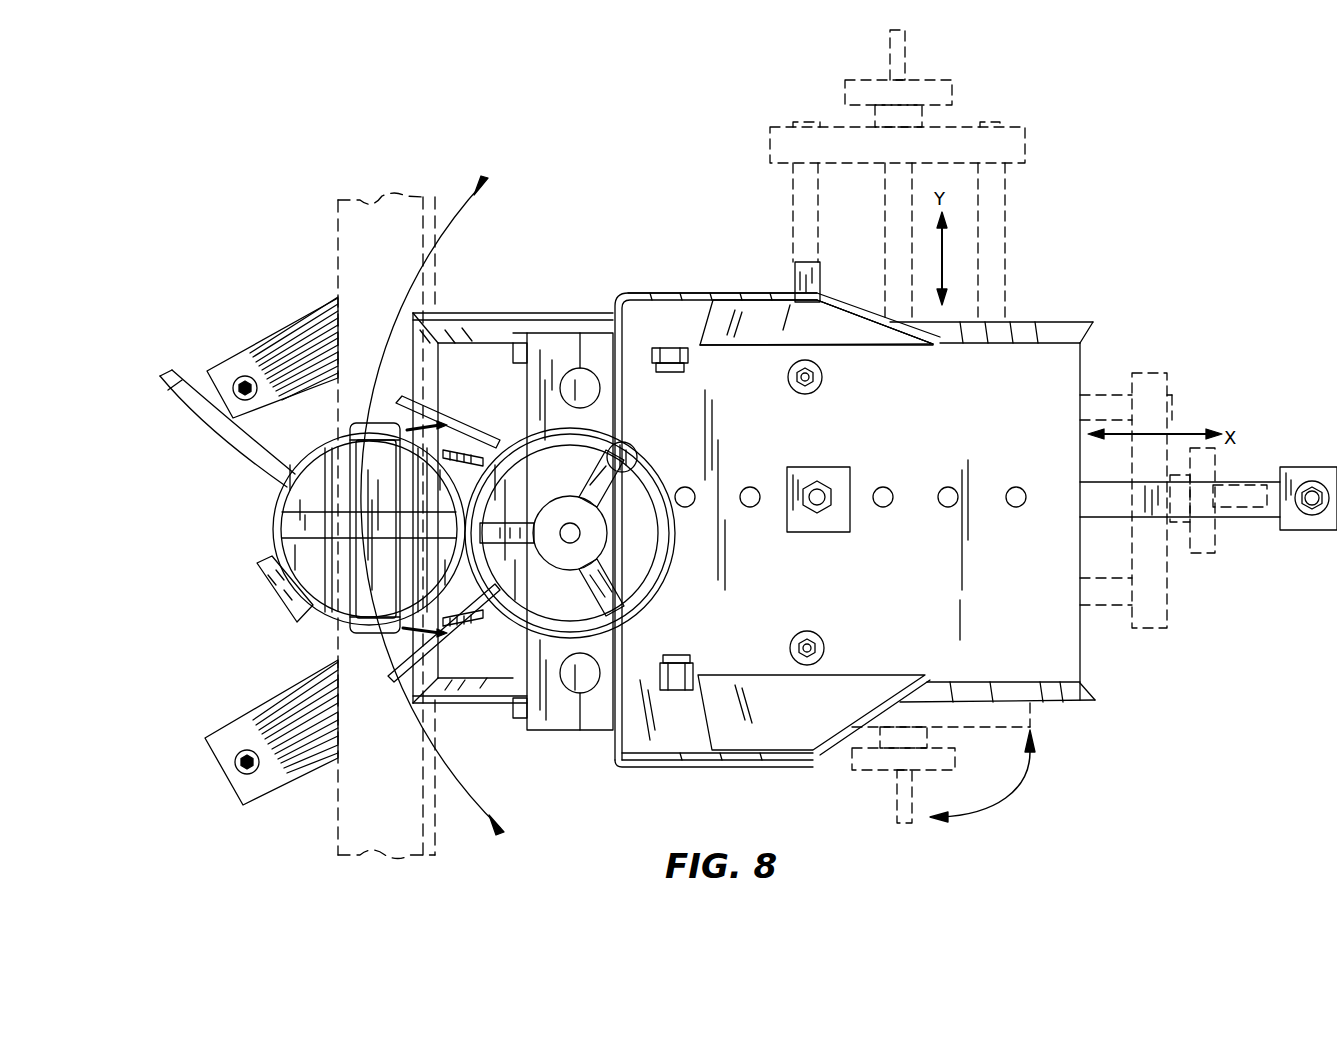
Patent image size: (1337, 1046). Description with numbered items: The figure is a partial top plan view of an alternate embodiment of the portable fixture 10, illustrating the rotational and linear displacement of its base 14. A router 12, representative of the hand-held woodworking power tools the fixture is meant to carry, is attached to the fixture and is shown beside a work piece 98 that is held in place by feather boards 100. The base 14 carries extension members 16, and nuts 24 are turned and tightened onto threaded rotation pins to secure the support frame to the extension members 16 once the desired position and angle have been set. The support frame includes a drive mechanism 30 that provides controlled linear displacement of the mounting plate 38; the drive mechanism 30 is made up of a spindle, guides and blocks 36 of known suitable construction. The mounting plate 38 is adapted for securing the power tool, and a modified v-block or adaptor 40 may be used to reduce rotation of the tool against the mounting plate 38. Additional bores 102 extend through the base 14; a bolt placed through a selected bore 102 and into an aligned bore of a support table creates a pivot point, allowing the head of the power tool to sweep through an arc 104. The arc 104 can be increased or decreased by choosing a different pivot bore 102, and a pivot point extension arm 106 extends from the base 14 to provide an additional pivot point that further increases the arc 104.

The portable fixture 10 is at (626, 225).
The router 12 is at (332, 620).
The base 14 is at (1071, 365).
The extension members 16 is at (735, 325).
The nuts 24 is at (683, 657).
The drive mechanism 30 is at (653, 467).
The blocks 36 is at (528, 728).
The mounting plate 38 is at (445, 430).
The adaptor 40 is at (470, 455).
The work piece 98 is at (372, 196).
The feather boards 100 is at (252, 357).
The bores 102 is at (888, 488).
The arc 104 is at (417, 280).
The pivot point extension arm 106 is at (1250, 482).